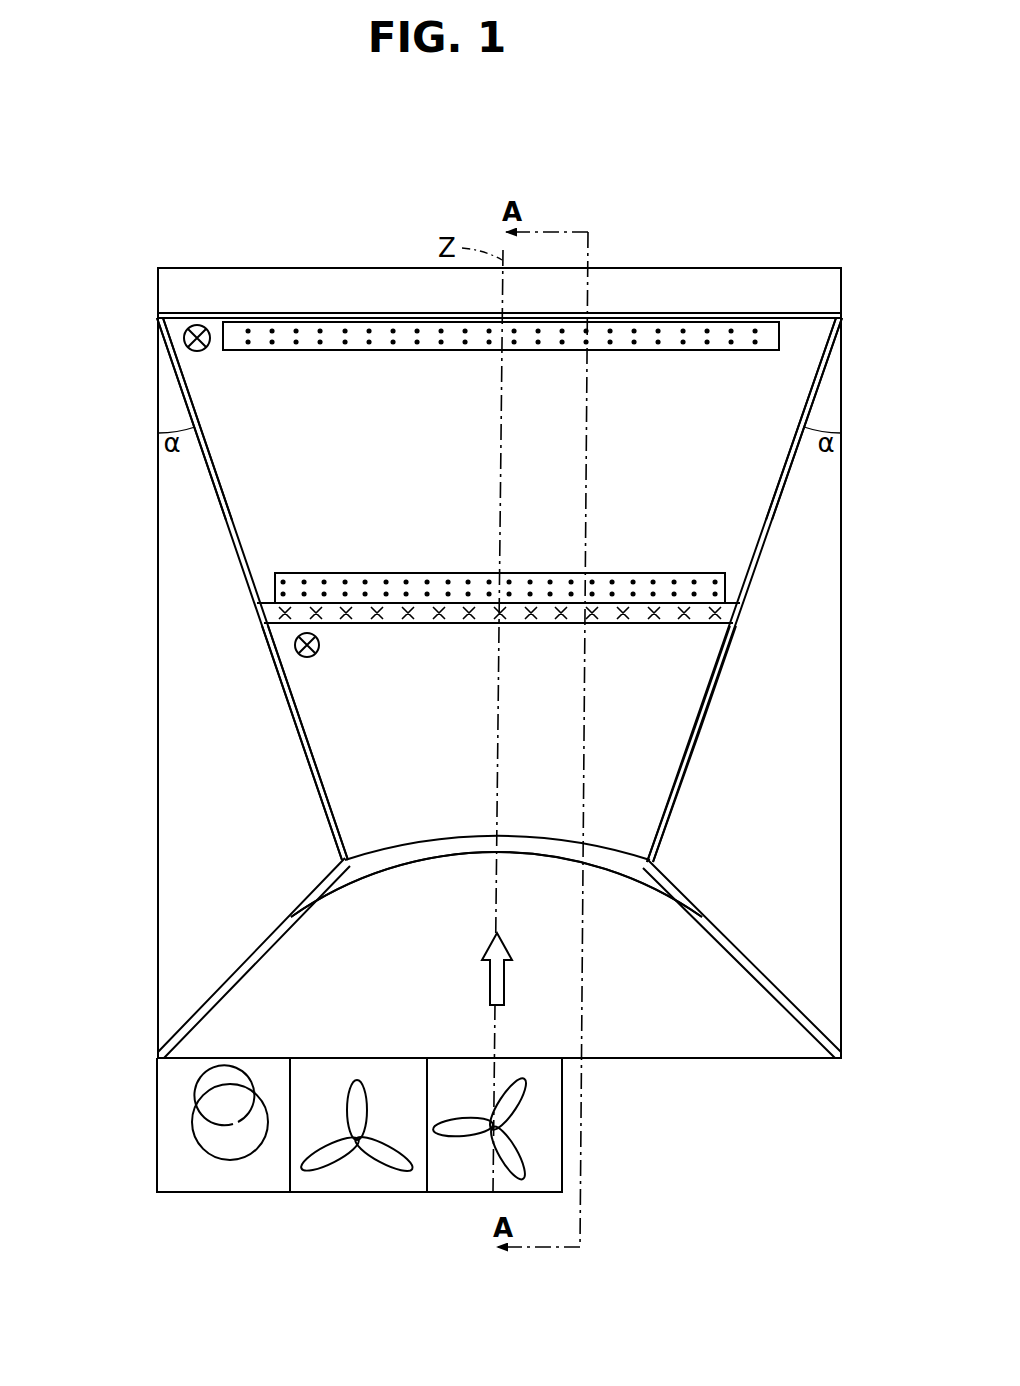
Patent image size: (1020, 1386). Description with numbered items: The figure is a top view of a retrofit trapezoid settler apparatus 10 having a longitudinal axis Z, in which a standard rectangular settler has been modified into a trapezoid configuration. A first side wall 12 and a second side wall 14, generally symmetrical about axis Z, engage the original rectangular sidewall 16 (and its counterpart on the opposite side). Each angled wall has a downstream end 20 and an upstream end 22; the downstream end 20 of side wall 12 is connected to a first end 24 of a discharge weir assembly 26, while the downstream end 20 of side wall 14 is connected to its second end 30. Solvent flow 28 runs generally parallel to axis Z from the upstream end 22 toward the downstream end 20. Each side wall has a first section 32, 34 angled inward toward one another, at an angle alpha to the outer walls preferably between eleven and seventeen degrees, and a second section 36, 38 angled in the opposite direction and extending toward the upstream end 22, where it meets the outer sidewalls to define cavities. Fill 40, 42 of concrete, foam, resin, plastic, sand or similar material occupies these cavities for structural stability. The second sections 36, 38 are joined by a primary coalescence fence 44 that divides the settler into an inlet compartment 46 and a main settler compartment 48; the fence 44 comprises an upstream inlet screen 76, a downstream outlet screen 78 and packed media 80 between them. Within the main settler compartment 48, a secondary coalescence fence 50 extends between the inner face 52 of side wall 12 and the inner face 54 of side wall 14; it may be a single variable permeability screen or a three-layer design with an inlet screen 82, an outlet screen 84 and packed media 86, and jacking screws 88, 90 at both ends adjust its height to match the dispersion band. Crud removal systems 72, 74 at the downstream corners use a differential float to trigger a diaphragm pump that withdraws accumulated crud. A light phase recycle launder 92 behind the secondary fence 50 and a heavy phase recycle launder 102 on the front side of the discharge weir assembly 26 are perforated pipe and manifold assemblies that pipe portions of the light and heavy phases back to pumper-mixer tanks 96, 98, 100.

The trapezoid settler apparatus 10 is at (843, 248).
The first side wall 12 is at (228, 553).
The second side wall 14 is at (770, 564).
The sidewall of standard rectangular settler 16 is at (158, 662).
The downstream end 20 is at (461, 160).
The upstream end 22 is at (130, 1029).
The first end of discharge weir assembly 24 is at (158, 300).
The discharge weir assembly 26 is at (240, 288).
The direction of solvent flow 28 is at (503, 992).
The second end of discharge weir assembly 30 is at (843, 288).
The first section of first side wall 32 is at (292, 697).
The first section of second side wall 34 is at (736, 650).
The second section of first side wall 36 is at (300, 900).
The second section of second side wall 38 is at (680, 876).
The fill 40 is at (158, 742).
The fill 42 is at (830, 694).
The primary coalescence fence 44 is at (487, 867).
The inlet compartment 46 is at (705, 1050).
The main settler compartment 48 is at (680, 748).
The secondary coalescence fence 50 is at (511, 628).
The inner face of first side wall 52 is at (232, 512).
The inner face of second side wall 54 is at (770, 522).
The crud removal system 72 is at (320, 648).
The crud removal system 74 is at (184, 336).
The upstream inlet screen 76 is at (418, 878).
The downstream outlet screen 78 is at (420, 842).
The packed media 80 is at (476, 852).
The inlet screen 82 is at (450, 628).
The outlet screen 84 is at (418, 603).
The packed media 86 is at (484, 608).
The jacking screw 88 is at (262, 616).
The jacking screw 90 is at (738, 612).
The light phase recycle launder 92 is at (568, 580).
The pumper-mixer tank 96 is at (236, 1134).
The pumper-mixer tank 98 is at (352, 1118).
The pumper-mixer tank 100 is at (488, 1125).
The heavy phase recycle launder 102 is at (410, 350).